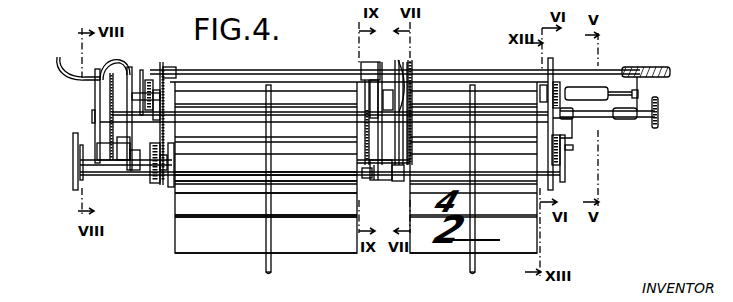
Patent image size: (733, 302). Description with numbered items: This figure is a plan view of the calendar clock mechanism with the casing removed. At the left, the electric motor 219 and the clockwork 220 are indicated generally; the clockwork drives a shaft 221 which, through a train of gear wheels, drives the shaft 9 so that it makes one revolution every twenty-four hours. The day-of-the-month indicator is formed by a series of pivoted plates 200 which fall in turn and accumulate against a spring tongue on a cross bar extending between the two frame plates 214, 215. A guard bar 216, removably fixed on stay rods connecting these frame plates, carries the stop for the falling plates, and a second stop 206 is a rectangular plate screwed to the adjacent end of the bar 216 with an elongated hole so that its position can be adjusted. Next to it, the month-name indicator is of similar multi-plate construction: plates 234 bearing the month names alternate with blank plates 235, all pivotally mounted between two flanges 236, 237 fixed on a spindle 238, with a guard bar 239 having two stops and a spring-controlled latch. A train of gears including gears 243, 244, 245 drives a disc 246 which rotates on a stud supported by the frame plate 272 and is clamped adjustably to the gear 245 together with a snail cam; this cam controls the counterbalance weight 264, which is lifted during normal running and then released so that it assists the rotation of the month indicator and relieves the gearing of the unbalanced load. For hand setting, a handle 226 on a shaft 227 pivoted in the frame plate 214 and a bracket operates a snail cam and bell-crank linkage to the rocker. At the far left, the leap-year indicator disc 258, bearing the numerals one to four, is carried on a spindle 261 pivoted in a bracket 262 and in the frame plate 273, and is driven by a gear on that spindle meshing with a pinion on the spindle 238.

The shaft 9 is at (617, 88).
The plates 200 is at (423, 248).
The stop 206 is at (473, 257).
The frame plate 214 is at (555, 178).
The frame plate 215 is at (397, 182).
The guard bar 216 is at (476, 228).
The electric motor 219 is at (100, 103).
The clockwork 220 is at (149, 78).
The shaft 221 is at (287, 80).
The handle 226 is at (653, 123).
The shaft 227 is at (590, 118).
The plates 234 is at (199, 222).
The blank plates 235 is at (227, 240).
The flange 236 is at (362, 200).
The flange 237 is at (173, 191).
The spindle 238 is at (173, 170).
The guard bar 239 is at (273, 229).
The gear 243 is at (405, 128).
The gear 244 is at (397, 123).
The gear 245 is at (402, 62).
The disc 246 is at (370, 142).
The disc 258 is at (83, 177).
The spindle 261 is at (142, 170).
The bracket 262 is at (136, 168).
The counterbalance weight 264 is at (369, 65).
The frame plate 272 is at (378, 180).
The frame plate 273 is at (162, 68).